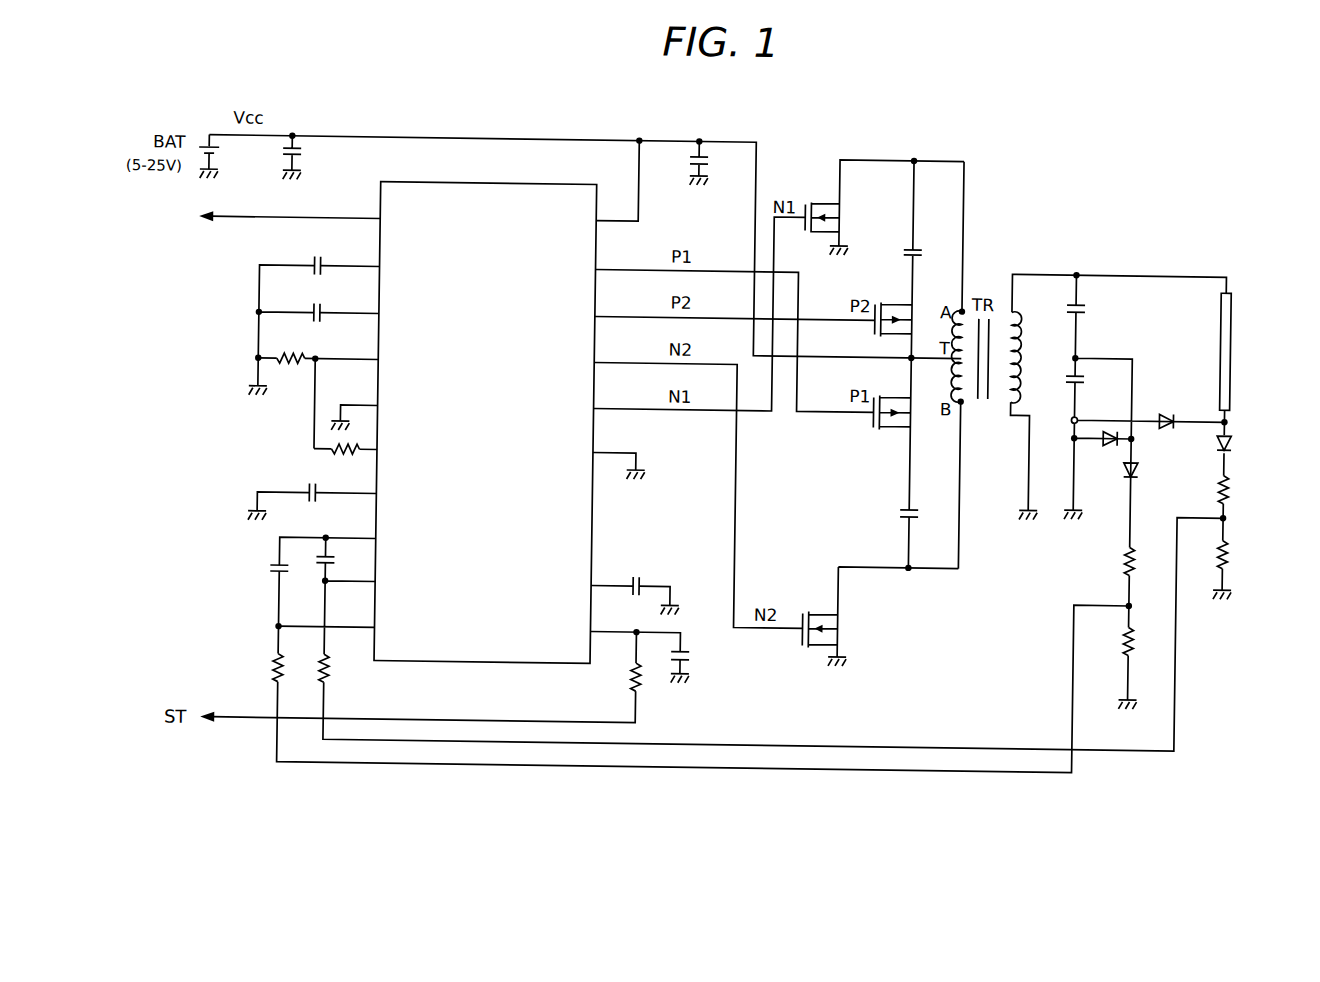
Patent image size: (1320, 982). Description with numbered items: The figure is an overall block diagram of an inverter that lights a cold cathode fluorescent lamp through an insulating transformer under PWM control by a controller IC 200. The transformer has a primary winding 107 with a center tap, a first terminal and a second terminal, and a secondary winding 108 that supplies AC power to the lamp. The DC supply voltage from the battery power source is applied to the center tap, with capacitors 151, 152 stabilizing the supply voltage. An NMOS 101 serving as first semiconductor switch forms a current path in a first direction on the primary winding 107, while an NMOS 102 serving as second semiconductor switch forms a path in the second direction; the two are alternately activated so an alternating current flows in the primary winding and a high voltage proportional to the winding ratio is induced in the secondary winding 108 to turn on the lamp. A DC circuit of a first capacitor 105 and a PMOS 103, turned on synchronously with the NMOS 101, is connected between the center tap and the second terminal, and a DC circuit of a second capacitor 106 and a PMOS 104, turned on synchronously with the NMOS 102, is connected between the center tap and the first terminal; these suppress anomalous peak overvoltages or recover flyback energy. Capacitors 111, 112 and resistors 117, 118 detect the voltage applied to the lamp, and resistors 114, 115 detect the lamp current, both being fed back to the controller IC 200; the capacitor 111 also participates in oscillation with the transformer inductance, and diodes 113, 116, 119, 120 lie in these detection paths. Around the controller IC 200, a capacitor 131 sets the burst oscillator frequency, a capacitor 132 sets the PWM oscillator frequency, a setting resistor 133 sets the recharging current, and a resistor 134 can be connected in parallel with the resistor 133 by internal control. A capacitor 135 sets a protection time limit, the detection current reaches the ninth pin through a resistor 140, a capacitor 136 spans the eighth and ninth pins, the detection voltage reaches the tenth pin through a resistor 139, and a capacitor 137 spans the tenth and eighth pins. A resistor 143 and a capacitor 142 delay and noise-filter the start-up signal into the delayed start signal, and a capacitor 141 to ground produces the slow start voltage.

The controller IC 200 is at (488, 186).
The n-type MOSFET (NMOS) 101 is at (805, 196).
The n-type MOSFET (NMOS) 102 is at (806, 611).
The p-type MOSFET (PMOS) 103 is at (878, 427).
The p-type MOSFET (PMOS) 104 is at (877, 300).
The first capacitor 105 is at (901, 511).
The second capacitor 106 is at (901, 247).
The primary winding 107 is at (953, 362).
The secondary winding 108 is at (1018, 335).
The capacitor 111 is at (1083, 303).
The capacitor 112 is at (1083, 378).
The diode 113 is at (1233, 432).
The resistor 114 is at (1238, 484).
The resistor 115 is at (1239, 548).
The diode 116 is at (1140, 465).
The resistor 117 is at (1122, 558).
The resistor 118 is at (1124, 638).
The diode 119 is at (1164, 407).
The diode 120 is at (1106, 441).
The capacitor 131 is at (313, 262).
The setting capacitor 132 is at (313, 309).
The setting resistor 133 is at (289, 370).
The setting resistor 134 is at (346, 460).
The capacitor 135 is at (311, 489).
The capacitor 136 is at (318, 568).
The capacitor 137 is at (271, 574).
The resistor 139 is at (271, 677).
The resistor 140 is at (333, 679).
The capacitor 141 is at (638, 577).
The capacitor 142 is at (692, 660).
The resistor 143 is at (626, 682).
The capacitor 151 is at (300, 157).
The capacitor 152 is at (705, 173).